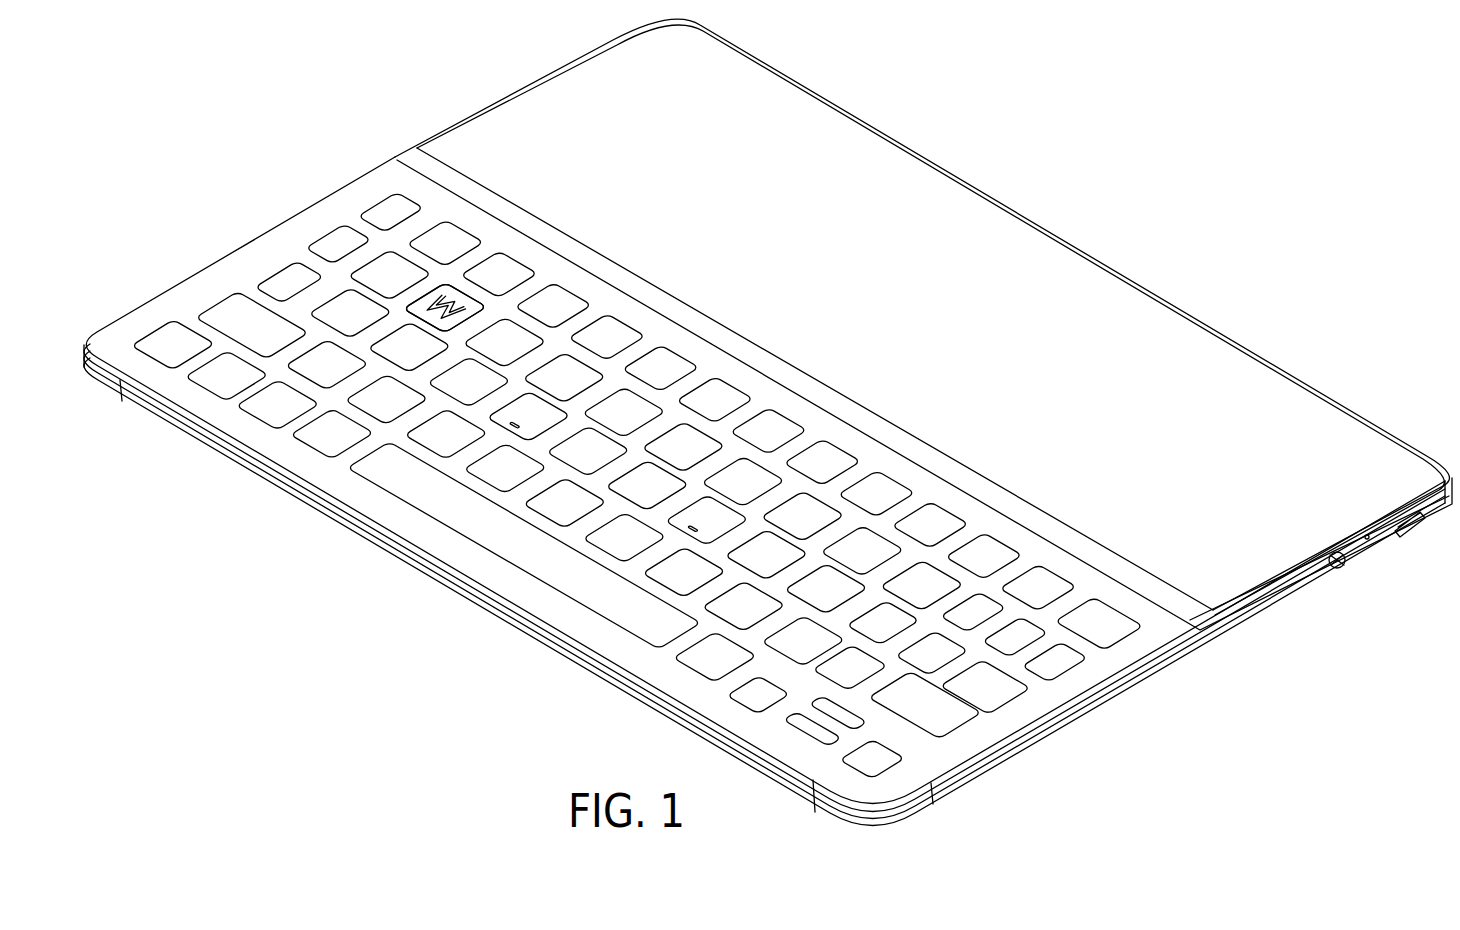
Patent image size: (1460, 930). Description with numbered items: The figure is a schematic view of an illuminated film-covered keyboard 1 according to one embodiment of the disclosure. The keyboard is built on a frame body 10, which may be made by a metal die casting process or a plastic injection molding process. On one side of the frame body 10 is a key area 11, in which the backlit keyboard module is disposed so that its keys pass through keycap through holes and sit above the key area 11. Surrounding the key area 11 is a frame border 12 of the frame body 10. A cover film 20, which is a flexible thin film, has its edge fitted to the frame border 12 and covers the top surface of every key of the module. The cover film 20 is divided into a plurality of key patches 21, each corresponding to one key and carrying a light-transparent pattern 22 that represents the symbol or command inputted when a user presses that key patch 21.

The illuminated film-covered keyboard 1 is at (1107, 237).
The frame body 10 is at (1187, 350).
The key area 11 is at (1074, 558).
The frame border 12 is at (1050, 708).
The cover film 20 is at (245, 268).
The key patch 21 is at (160, 337).
The light-transparent pattern 22 is at (448, 300).